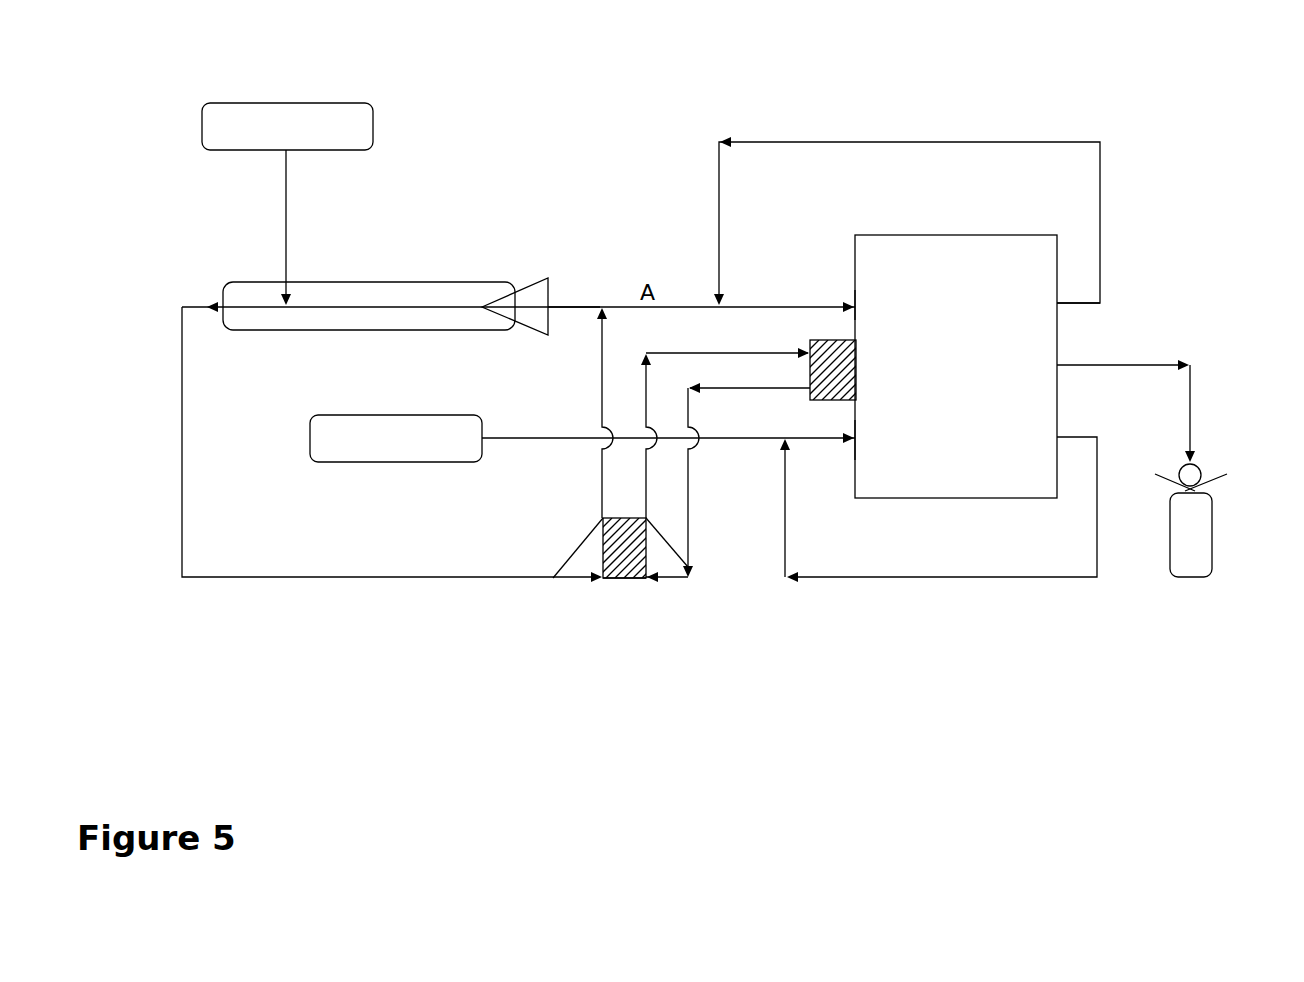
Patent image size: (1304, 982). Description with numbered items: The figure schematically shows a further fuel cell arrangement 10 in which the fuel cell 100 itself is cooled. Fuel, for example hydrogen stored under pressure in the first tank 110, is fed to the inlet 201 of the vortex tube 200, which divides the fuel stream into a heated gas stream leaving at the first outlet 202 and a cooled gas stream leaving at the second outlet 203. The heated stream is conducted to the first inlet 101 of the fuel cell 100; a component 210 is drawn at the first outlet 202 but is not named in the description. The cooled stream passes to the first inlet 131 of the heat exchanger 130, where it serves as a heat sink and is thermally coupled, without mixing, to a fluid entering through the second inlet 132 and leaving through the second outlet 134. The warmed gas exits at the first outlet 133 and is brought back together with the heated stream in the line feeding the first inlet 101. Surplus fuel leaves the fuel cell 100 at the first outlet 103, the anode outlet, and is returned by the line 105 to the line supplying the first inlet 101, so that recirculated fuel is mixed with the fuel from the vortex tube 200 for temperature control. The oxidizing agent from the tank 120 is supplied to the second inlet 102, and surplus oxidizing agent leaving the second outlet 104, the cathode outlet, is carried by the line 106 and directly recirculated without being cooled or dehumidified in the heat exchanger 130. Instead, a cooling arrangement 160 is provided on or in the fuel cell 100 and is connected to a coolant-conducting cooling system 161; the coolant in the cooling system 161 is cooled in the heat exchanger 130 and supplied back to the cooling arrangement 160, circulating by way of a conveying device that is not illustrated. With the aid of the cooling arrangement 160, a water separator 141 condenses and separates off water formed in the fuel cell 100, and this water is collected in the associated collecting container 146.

The fuel cell arrangement 10 is at (62, 104).
The fuel cell 100 is at (990, 268).
The first inlet 101 is at (850, 297).
The second inlet 102 is at (860, 446).
The first outlet 103 is at (1065, 299).
The second outlet 104 is at (1100, 382).
The line 105 is at (937, 140).
The line 106 is at (1060, 578).
The first tank 110 is at (288, 130).
The tank 120 is at (380, 450).
The heat exchanger 130 is at (618, 585).
The first inlet 131 is at (600, 587).
The second inlet 132 is at (650, 585).
The first outlet 133 is at (553, 578).
The second outlet 134 is at (689, 570).
The water separator 141 is at (1200, 462).
The collecting container 146 is at (1185, 555).
The cooling arrangement 160 is at (807, 341).
The cooling system 161 is at (751, 356).
The vortex tube 200 is at (413, 288).
The inlet 201 is at (282, 298).
The first outlet 202 is at (549, 292).
The second outlet 203 is at (213, 304).
The nozzle 210 is at (528, 296).